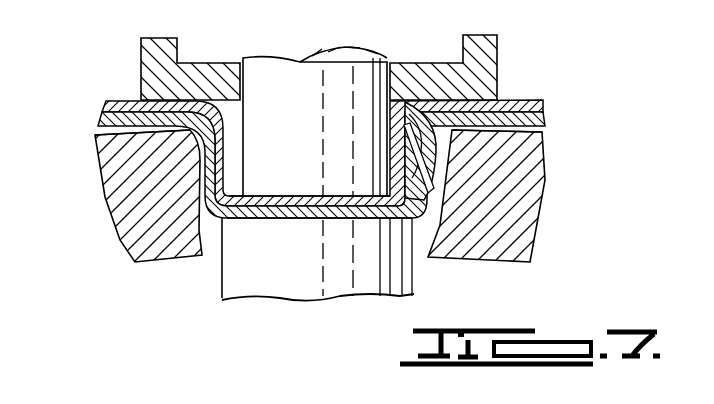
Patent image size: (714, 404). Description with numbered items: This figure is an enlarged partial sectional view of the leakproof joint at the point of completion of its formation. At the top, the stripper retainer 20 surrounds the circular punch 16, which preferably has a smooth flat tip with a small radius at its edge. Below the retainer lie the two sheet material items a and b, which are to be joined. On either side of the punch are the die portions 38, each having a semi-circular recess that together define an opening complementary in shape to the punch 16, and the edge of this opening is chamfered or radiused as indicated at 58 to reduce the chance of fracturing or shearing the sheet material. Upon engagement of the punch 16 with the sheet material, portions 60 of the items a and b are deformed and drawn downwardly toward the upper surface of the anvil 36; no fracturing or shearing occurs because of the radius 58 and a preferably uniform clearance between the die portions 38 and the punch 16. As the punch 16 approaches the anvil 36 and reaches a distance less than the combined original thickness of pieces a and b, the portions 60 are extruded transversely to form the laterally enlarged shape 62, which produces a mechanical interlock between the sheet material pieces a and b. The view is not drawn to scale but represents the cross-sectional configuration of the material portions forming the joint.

The stripper retainer 20 is at (140, 58).
The punch 16 is at (304, 149).
The sheet material item a is at (525, 100).
The sheet material item b is at (530, 118).
The radius 58 is at (183, 141).
The laterally enlarged shape 62 is at (434, 178).
The die portions 38 is at (329, 196).
The sheet material portions 60 is at (296, 212).
The anvil 36 is at (290, 283).